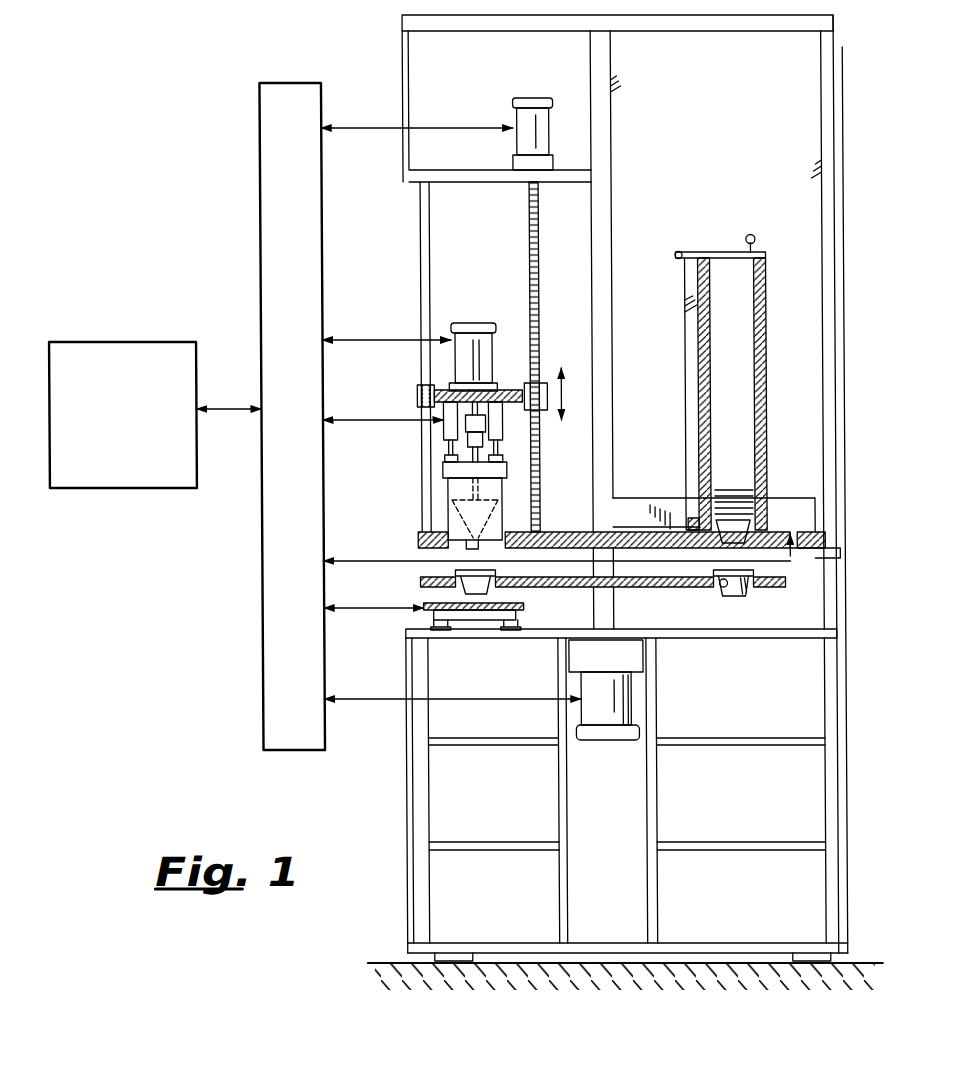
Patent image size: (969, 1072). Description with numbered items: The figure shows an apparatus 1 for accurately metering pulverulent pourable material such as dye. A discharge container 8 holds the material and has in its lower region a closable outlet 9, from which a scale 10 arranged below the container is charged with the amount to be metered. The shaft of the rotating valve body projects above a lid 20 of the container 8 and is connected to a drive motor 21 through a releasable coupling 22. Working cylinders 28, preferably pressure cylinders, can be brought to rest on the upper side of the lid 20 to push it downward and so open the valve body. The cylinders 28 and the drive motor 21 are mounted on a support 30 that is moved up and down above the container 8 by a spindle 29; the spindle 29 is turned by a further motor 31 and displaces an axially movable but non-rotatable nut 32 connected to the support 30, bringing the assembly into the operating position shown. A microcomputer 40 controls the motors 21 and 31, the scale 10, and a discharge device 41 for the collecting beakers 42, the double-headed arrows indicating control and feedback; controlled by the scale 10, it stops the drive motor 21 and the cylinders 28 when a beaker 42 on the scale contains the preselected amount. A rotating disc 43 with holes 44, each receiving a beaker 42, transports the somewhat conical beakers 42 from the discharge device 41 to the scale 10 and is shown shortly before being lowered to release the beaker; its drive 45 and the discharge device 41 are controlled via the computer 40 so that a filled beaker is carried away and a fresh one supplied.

The apparatus 1 is at (322, 775).
The discharge container 8 is at (458, 500).
The closable outlet 9 is at (470, 546).
The scale 10 is at (456, 613).
The lid 20 is at (452, 470).
The drive motor 21 is at (476, 347).
The releasable coupling 22 is at (484, 449).
The working cylinders 28 is at (446, 435).
The spindle 29 is at (530, 240).
The support 30 is at (436, 390).
The further motor 31 is at (530, 113).
The nut 32 is at (547, 384).
The microcomputer 40 is at (85, 474).
The discharge device 41 is at (768, 470).
The collecting beakers 42 is at (495, 585).
The rotating disc 43 is at (636, 586).
The holes 44 is at (722, 586).
The drive 45 is at (590, 720).